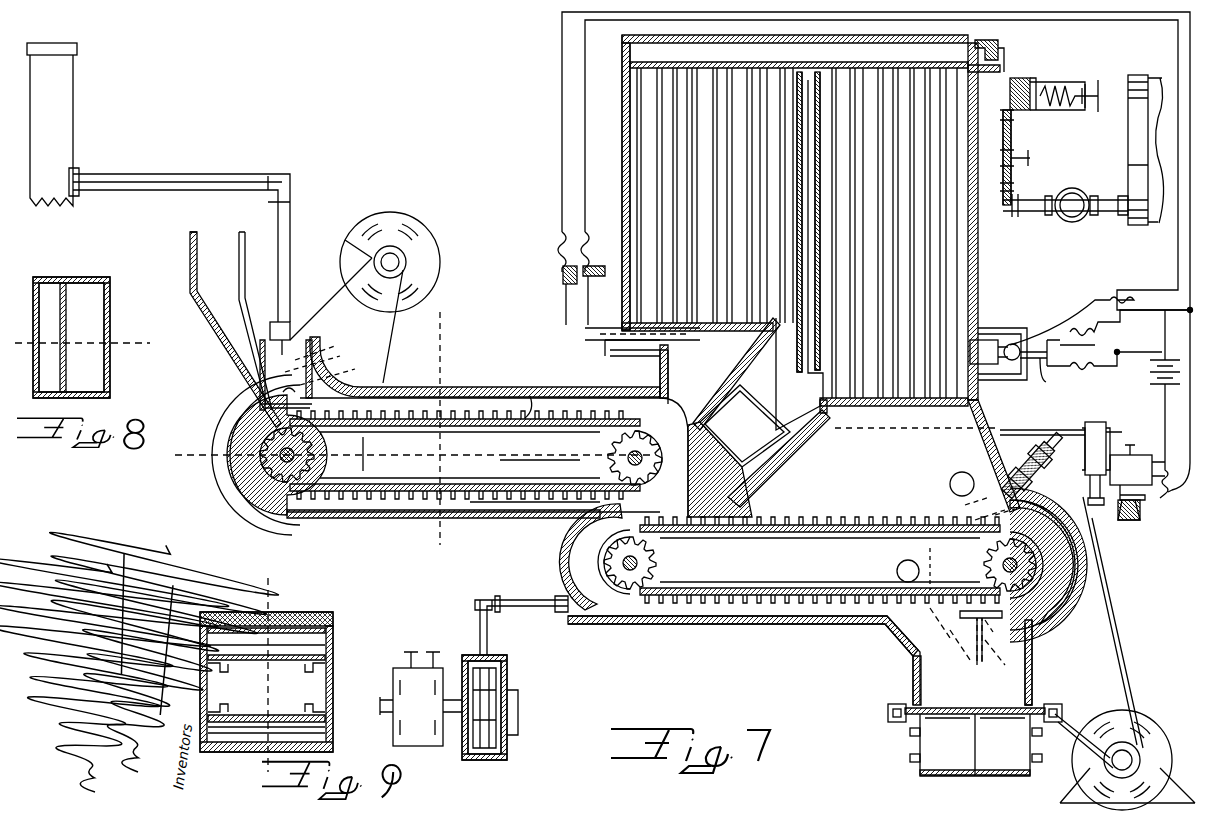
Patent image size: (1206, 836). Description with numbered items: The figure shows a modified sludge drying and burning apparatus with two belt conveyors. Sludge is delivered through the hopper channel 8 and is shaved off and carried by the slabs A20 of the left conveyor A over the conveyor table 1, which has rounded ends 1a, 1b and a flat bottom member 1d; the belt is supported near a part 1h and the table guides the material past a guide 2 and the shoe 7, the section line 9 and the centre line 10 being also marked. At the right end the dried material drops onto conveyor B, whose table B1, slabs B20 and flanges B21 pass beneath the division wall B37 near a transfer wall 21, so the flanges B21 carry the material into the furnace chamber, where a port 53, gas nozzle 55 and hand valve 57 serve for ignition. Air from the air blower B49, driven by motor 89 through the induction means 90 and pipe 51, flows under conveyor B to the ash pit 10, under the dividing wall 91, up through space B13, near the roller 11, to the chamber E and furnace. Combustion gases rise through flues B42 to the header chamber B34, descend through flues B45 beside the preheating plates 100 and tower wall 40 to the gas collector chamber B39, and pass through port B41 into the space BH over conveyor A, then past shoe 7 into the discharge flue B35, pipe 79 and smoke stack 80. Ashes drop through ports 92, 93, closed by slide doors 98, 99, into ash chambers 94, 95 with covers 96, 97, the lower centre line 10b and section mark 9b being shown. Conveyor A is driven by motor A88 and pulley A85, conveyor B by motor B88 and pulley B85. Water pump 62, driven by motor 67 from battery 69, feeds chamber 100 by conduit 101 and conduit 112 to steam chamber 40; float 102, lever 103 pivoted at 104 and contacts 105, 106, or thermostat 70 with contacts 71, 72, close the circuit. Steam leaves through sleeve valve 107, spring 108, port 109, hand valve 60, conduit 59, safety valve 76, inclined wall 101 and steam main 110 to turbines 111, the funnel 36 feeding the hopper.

In FIG. 7, the smoke stack 80 is at (62, 128).
In FIG. 7, the pipe 79 is at (290, 252).
In FIG. 7, the funnel / feed chute 36 is at (212, 242).
In FIG. 8, the funnel / feed chute 36 is at (55, 338).
In FIG. 7, the sludge port or hopper channel 8 is at (236, 414).
In FIG. 7, the guide 2 is at (289, 393).
In FIG. 7, the motor A88 is at (393, 216).
In FIG. 7, the pulley A85 is at (398, 260).
In FIG. 7, the section line 9— 9 is at (439, 429).
In FIG. 7, the gas discharge flue B35 is at (318, 348).
In FIG. 8, the gas discharge flue B35 is at (96, 288).
In FIG. 7, the conveyor A is at (405, 510).
In FIG. 9, the conveyor A is at (300, 640).
In FIG. 7, the conveyor table 1 is at (500, 440).
In FIG. 9, the conveyor table 1 is at (240, 670).
In FIG. 7, the curved end part 1a is at (310, 458).
In FIG. 7, the belt support 1h is at (365, 454).
In FIG. 7, the flat bottom member 1d is at (510, 478).
In FIG. 7, the curved end part 1b is at (605, 468).
In FIG. 7, the ash pit 10 is at (375, 455).
In FIG. 7, the conveyor slabs A20 is at (505, 510).
In FIG. 7, the transfer wall 21 is at (658, 496).
In FIG. 7, the gas collector chamber B39 is at (668, 380).
In FIG. 7, the port B41 is at (692, 420).
In FIG. 7, the division wall B37 is at (739, 451).
In FIG. 7, the flues B45 is at (722, 328).
In FIG. 7, the flues B42 is at (830, 425).
In FIG. 7, the conduit 112 is at (802, 236).
In FIG. 7, the header chamber B34 is at (795, 220).
In FIG. 7, the water preheating chamber 100 is at (622, 205).
In FIG. 7, the steam generation chamber 40 is at (968, 258).
In FIG. 7, the conduit 101 is at (998, 430).
In FIG. 7, the safety steam exhaust valve means 76 is at (1000, 58).
In FIG. 7, the pressure controlled sleeve valve 107 is at (1028, 82).
In FIG. 7, the spring 108 is at (1075, 82).
In FIG. 7, the discharge port 109 is at (1018, 120).
In FIG. 7, the hand valve 60 is at (1034, 158).
In FIG. 7, the steam conduit 59 is at (1018, 184).
In FIG. 7, the steam main 110 is at (1070, 214).
In FIG. 7, the steam power turbines 111 is at (1160, 222).
In FIG. 7, the float 102 is at (980, 340).
In FIG. 7, the lever 103 is at (1056, 373).
In FIG. 7, the pivot 104 is at (1072, 314).
In FIG. 7, the contact 105 is at (1111, 351).
In FIG. 7, the contact 106 is at (1126, 320).
In FIG. 7, the battery 69 is at (1152, 368).
In FIG. 7, the water pump 62 is at (1095, 432).
In FIG. 7, the electric motor 67 is at (1133, 455).
In FIG. 7, the port 53 is at (960, 480).
In FIG. 7, the hand valve 57 is at (1048, 472).
In FIG. 7, the gas nozzle 55 is at (990, 508).
In FIG. 7, the conveyor B is at (712, 525).
In FIG. 7, the table B1 is at (778, 546).
In FIG. 7, the port or door opening 11 is at (919, 563).
In FIG. 7, the flanges B21 is at (778, 520).
In FIG. 7, the slabs B20 is at (845, 525).
In FIG. 7, the chamber E is at (885, 462).
In FIG. 7, the space B13 is at (971, 636).
In FIG. 7, the dividing wall 91 is at (975, 665).
In FIG. 7, the port 92 is at (932, 708).
In FIG. 7, the port 93 is at (995, 710).
In FIG. 7, the ash chamber 94 is at (938, 785).
In FIG. 7, the ash chamber 95 is at (1000, 785).
In FIG. 7, the ash removal door or cover 96 is at (912, 745).
In FIG. 7, the ash removal door or cover 97 is at (1040, 738).
In FIG. 7, the slide door 98 is at (942, 720).
In FIG. 7, the slide door 99 is at (994, 720).
In FIG. 7, the center line 10b is at (922, 672).
In FIG. 7, the motor B88 is at (1118, 730).
In FIG. 7, the pulley B85 is at (1108, 742).
In FIG. 7, the variable speed electric motor 89 is at (416, 668).
In FIG. 7, the air blower B49 is at (510, 672).
In FIG. 7, the air induction means 90 is at (520, 712).
In FIG. 7, the pipe 51 is at (505, 612).
In FIG. 7, the section line 9b is at (612, 618).
In FIG. 7, the thermostatic two element control means 70 is at (608, 328).
In FIG. 7, the contact 71 is at (590, 328).
In FIG. 7, the contact 72 is at (566, 316).
In FIG. 7, the space BH is at (530, 396).
In FIG. 8, the shoe 7 is at (82, 330).
In FIG. 9, the shoe 7 is at (259, 674).